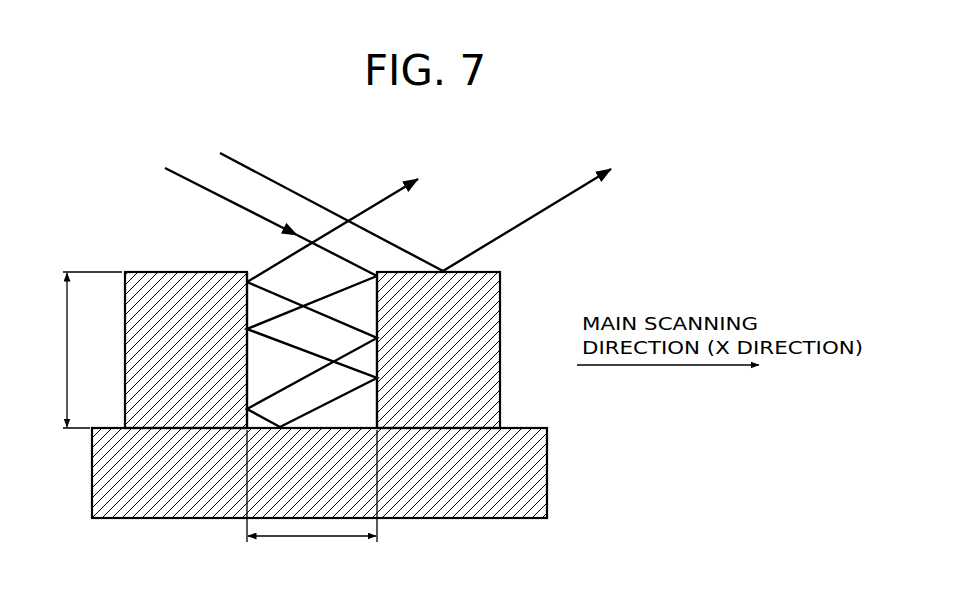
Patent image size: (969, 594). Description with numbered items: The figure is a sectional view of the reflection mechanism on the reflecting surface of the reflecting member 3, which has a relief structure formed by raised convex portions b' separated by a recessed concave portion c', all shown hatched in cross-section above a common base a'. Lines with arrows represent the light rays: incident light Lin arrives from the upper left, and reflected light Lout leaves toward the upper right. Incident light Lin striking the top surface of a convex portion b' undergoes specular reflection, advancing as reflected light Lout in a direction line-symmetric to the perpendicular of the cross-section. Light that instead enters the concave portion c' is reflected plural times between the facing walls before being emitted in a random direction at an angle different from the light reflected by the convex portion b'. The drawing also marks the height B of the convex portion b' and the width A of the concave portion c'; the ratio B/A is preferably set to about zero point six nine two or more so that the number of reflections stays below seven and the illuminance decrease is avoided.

The reflecting member 3 is at (674, 172).
The substrate of grating a' is at (330, 491).
The convex portion b' is at (330, 328).
The concave portion c' is at (289, 324).
The incident light Lin is at (231, 157).
The reflected light Lout is at (378, 202).
The width of the concave portion A is at (312, 496).
The height of the convex portion B is at (91, 350).